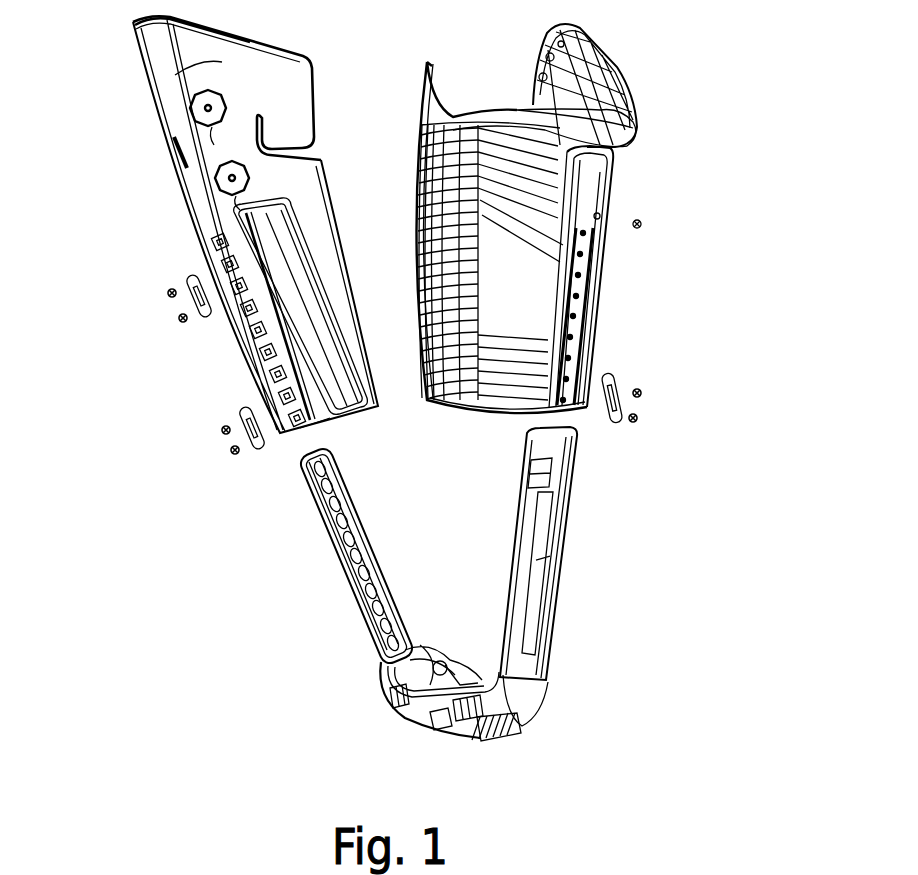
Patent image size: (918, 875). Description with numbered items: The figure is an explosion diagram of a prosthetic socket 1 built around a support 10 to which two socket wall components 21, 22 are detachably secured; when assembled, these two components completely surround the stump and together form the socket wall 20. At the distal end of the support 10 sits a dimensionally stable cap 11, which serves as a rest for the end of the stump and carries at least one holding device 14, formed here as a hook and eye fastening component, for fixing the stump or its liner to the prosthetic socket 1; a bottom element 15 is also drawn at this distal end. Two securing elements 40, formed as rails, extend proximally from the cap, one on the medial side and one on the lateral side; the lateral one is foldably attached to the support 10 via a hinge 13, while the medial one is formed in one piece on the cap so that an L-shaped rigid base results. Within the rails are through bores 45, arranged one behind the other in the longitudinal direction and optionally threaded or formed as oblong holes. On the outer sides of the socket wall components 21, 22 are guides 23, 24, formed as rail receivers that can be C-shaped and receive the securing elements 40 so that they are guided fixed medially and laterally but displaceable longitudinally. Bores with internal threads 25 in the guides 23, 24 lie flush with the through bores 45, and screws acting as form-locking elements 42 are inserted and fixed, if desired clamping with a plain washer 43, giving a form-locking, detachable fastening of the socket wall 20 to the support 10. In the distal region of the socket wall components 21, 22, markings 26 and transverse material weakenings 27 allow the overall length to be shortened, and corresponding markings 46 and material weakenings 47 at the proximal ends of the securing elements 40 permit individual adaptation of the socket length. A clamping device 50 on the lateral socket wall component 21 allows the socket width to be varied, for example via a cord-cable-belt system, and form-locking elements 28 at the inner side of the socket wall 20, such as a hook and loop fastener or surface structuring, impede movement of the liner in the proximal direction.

The prosthetic socket 1 is at (667, 245).
The support 10 is at (568, 619).
The dimensionally stable cap 11 is at (437, 735).
The hinge 13 is at (432, 648).
The holding device 14 is at (446, 656).
The sole pad 15 is at (500, 742).
The socket wall 20 is at (333, 118).
The lateral socket wall component 21 is at (137, 58).
The socket wall component 22 is at (448, 115).
The guide 23 is at (318, 412).
The guide 24 is at (602, 265).
The bores with internal threads 25 is at (243, 332).
The markings 26 is at (595, 334).
The material weakenings 27 is at (492, 398).
The form-locking elements 28 is at (288, 262).
The securing element 40 is at (306, 497).
The form-locking elements 42 is at (170, 292).
The plain washer 43 is at (188, 276).
The through bores 45 is at (352, 498).
The markings 46 is at (545, 496).
The material weakenings 47 is at (532, 457).
The clamping device 50 is at (192, 104).